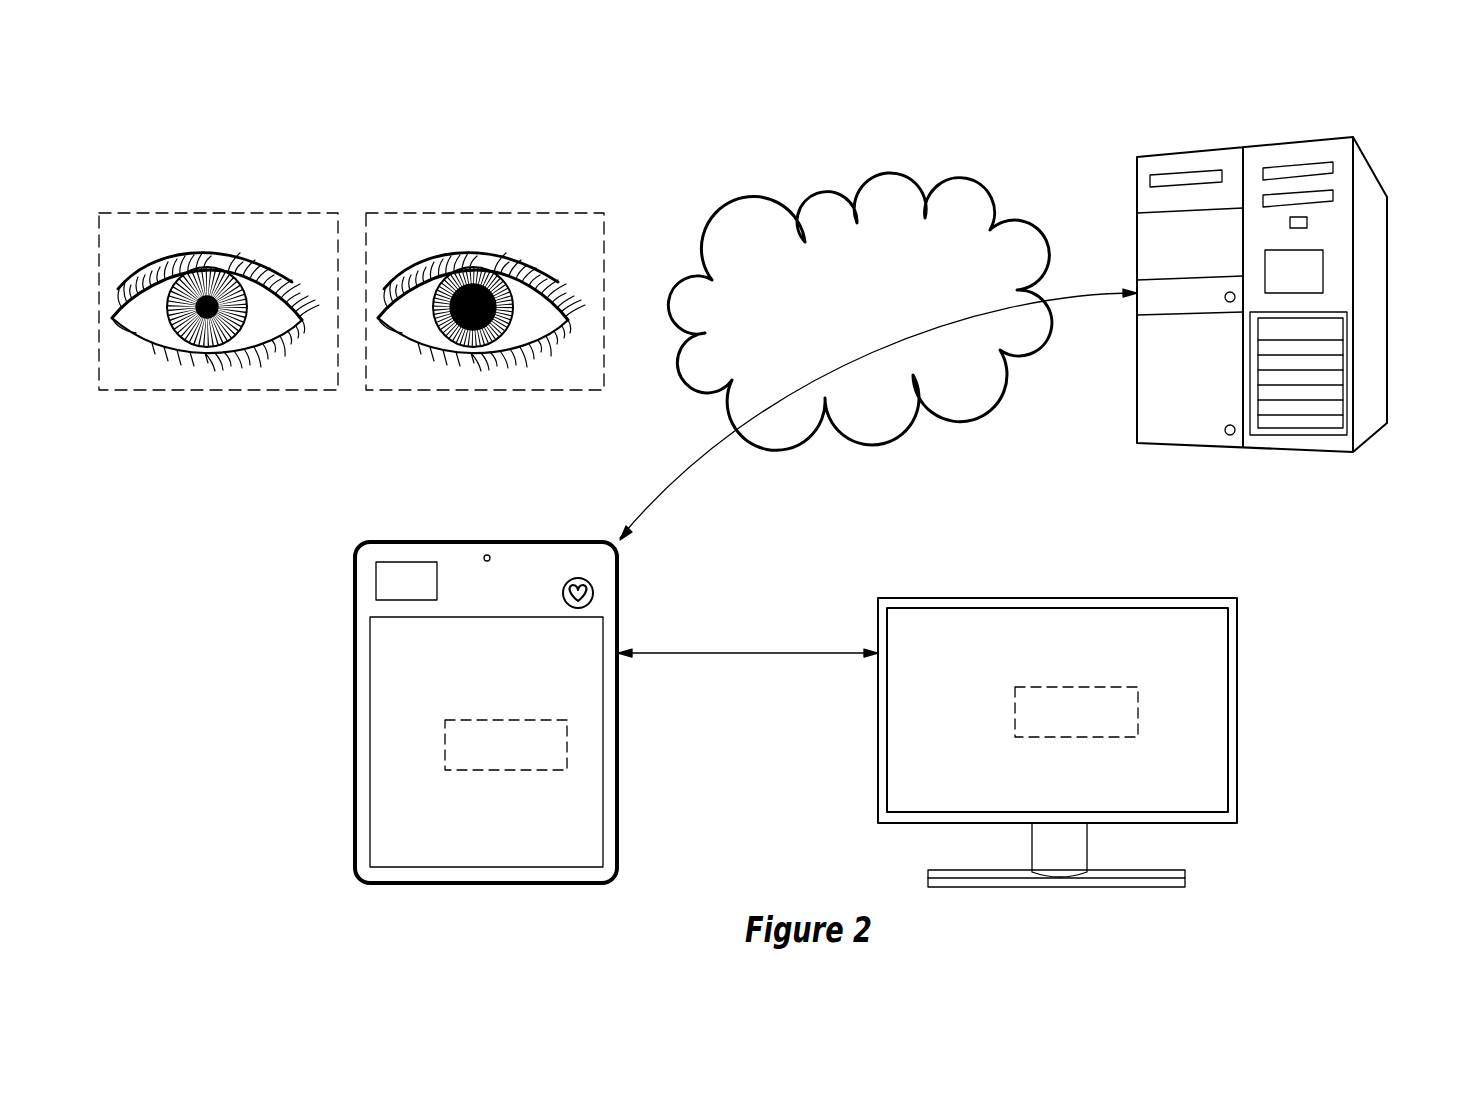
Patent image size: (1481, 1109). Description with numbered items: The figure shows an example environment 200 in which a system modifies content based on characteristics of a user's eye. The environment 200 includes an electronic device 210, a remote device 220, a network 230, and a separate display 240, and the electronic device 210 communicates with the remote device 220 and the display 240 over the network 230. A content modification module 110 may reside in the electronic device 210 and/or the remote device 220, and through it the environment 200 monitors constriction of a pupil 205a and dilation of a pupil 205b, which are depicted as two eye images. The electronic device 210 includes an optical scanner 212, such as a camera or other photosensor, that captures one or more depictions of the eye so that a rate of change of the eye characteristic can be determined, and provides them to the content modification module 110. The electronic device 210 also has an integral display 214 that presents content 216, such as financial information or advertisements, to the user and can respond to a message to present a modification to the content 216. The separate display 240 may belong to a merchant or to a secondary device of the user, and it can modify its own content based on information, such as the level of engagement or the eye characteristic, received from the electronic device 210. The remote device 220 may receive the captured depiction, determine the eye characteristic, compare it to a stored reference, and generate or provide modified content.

The environment 200 is at (1391, 100).
The constriction of a pupil 205a is at (263, 213).
The dilation of a pupil 205b is at (530, 213).
The network 230 is at (874, 294).
The remote device 220 is at (1387, 267).
The content modification module 110 is at (1309, 282).
The electronic device 210 is at (617, 758).
The optical scanner 212 is at (595, 593).
The display 214 is at (617, 717).
The content 216 is at (568, 760).
The display 240 is at (1238, 642).